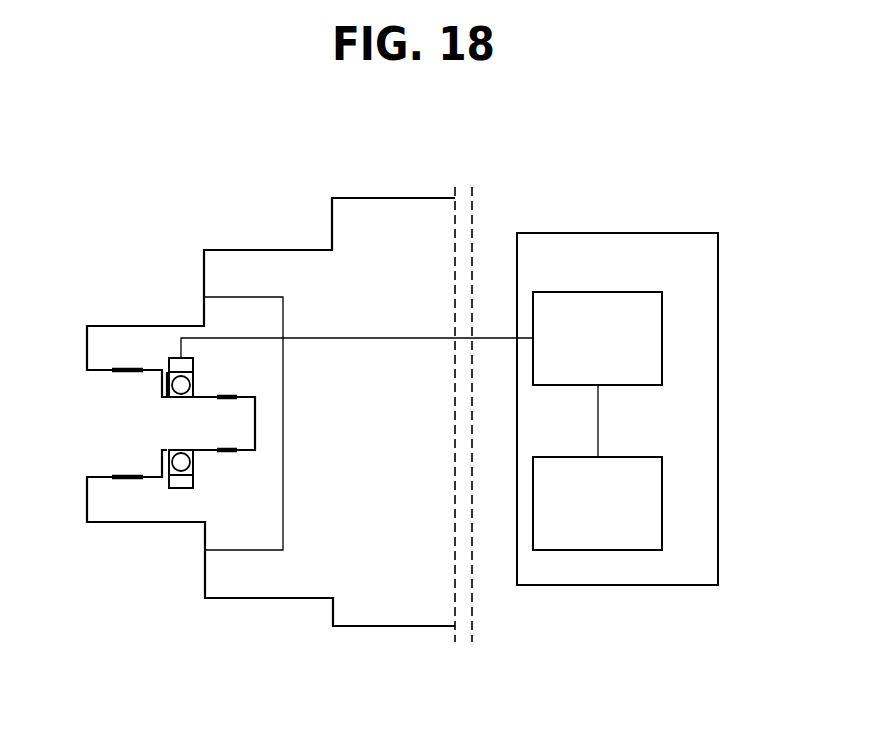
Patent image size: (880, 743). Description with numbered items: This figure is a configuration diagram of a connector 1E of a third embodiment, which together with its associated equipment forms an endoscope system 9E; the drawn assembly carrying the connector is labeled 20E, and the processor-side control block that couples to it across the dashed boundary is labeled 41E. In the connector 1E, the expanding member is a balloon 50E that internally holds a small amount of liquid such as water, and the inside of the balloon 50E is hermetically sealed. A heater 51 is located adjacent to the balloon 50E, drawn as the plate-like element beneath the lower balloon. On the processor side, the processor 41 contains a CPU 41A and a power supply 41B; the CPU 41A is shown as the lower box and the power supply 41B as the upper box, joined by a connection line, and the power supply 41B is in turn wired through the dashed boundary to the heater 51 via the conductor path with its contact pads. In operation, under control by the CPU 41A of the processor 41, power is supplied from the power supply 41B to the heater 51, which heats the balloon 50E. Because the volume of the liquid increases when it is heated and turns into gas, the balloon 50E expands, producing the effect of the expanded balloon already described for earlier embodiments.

The sensor module 20E is at (296, 403).
The connector 1E is at (301, 403).
The processor 41 is at (300, 248).
The balloon 50E is at (131, 480).
The heater 51 is at (182, 488).
The endoscope system 9E is at (637, 355).
The control unit 41E is at (617, 384).
The power supply 41B is at (622, 291).
The CPU 41A is at (622, 456).